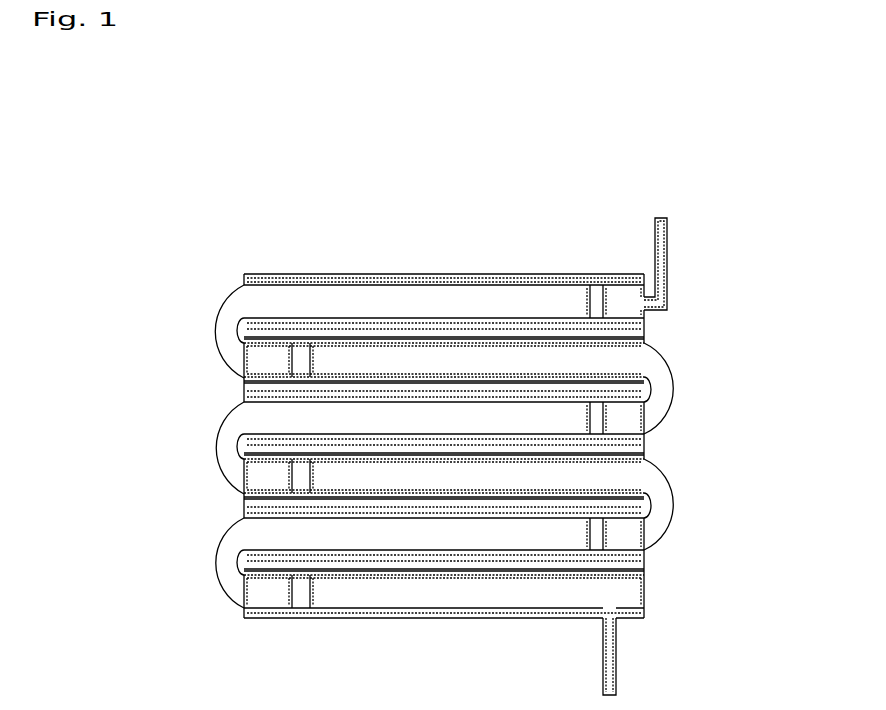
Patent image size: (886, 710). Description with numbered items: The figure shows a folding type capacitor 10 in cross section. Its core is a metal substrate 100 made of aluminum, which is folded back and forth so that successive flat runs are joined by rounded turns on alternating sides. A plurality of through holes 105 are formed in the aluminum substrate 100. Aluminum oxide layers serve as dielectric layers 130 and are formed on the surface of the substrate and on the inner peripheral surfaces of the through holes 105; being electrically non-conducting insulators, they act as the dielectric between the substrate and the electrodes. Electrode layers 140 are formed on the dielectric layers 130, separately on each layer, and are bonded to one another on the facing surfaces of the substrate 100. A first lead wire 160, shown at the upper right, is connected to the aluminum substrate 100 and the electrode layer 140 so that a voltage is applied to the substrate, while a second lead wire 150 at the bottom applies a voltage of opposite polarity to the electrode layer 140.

The folding type capacitor 10 is at (256, 107).
The metal substrate 100 is at (217, 327).
The through holes 105 is at (595, 272).
The dielectric layers 130 is at (273, 275).
The electrode layers 140 is at (315, 275).
The second lead wire 150 is at (616, 663).
The first lead wire 160 is at (667, 263).